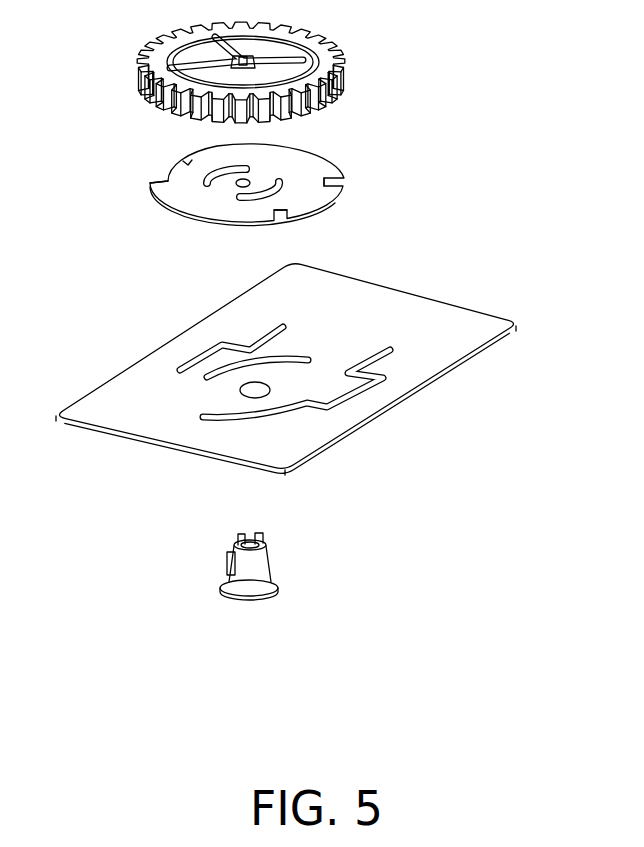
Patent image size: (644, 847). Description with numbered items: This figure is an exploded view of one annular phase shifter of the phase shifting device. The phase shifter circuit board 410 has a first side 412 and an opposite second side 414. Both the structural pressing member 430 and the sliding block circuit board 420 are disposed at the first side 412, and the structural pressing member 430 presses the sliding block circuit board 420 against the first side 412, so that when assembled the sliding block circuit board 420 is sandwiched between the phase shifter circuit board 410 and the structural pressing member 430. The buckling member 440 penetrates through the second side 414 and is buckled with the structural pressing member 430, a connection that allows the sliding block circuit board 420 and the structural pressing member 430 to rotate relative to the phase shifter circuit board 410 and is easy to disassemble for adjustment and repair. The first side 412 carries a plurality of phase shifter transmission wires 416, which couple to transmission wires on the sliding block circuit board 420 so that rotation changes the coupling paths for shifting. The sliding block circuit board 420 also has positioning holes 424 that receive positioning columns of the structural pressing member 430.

The phase shifter circuit board 410 is at (575, 355).
The first side 412 is at (427, 345).
The second side 414 is at (380, 420).
The phase shifter transmission wires 416 is at (208, 345).
The sliding block circuit board 420 is at (307, 172).
The positioning holes 424 is at (187, 162).
The structural pressing member 430 is at (333, 40).
The buckling member 440 is at (258, 581).